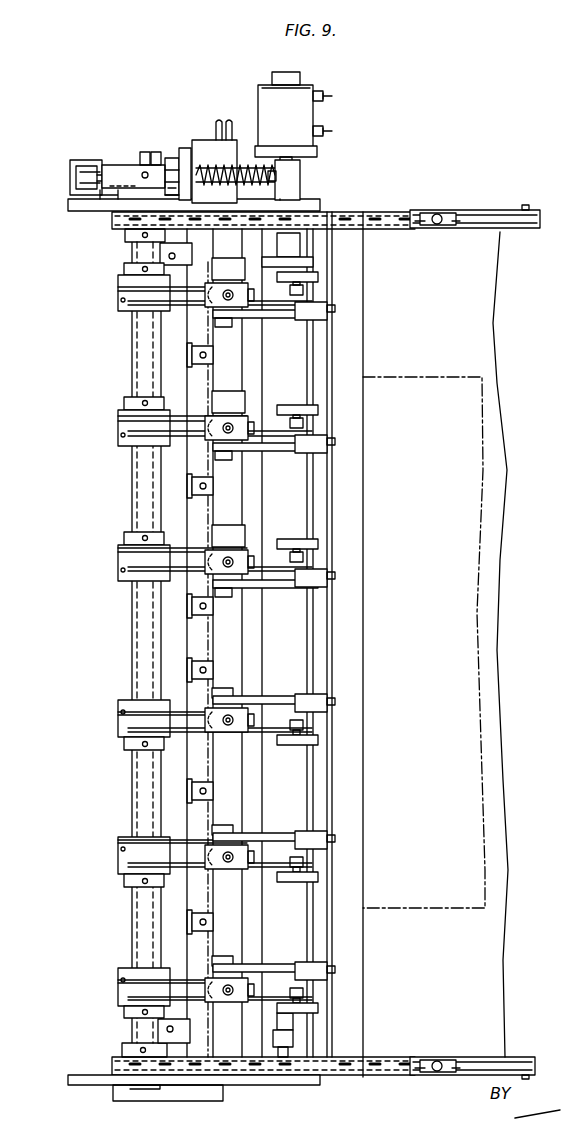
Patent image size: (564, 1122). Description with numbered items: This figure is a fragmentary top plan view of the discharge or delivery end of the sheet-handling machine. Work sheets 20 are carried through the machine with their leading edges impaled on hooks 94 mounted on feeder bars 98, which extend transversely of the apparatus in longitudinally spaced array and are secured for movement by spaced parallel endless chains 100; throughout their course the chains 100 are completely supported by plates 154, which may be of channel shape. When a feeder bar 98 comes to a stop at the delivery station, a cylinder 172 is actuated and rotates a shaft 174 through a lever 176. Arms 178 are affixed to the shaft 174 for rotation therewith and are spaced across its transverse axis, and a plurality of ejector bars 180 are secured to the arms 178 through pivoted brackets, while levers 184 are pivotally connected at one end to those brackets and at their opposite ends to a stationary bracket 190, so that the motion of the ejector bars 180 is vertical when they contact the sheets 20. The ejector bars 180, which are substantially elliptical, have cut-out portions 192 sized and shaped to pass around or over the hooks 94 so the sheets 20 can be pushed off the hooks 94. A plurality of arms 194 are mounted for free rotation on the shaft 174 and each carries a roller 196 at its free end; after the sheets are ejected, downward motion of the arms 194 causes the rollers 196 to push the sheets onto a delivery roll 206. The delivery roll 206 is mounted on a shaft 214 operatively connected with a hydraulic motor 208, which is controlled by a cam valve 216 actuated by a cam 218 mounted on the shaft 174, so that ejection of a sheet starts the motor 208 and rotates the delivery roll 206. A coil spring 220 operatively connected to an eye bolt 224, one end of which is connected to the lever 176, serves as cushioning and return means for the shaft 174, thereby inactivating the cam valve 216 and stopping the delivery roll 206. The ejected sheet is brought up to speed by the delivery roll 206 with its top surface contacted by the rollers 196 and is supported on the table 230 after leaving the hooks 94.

The work sheets 20 is at (431, 378).
The hooks 94 is at (200, 358).
The feeder bars 98 is at (163, 680).
The endless chains 100 is at (433, 213).
The plates 154 is at (485, 222).
The cylinder 172 is at (80, 175).
The shaft 174 is at (146, 486).
The lever 176 is at (122, 166).
The arms 178 is at (118, 305).
The ejector bars 180 is at (249, 391).
The levers 184 is at (282, 318).
The stationary bracket 190 is at (325, 318).
The cut-out portions 192 is at (215, 356).
The arms 194 is at (256, 280).
The rollers 196 is at (310, 278).
The delivery roll 206 is at (303, 644).
The hydraulic motor 208 is at (265, 90).
The shaft 214 is at (300, 252).
The cam valve 216 is at (205, 146).
The cam 218 is at (170, 152).
The coil spring 220 is at (277, 193).
The eye bolt 224 is at (287, 177).
The table 230 is at (490, 347).